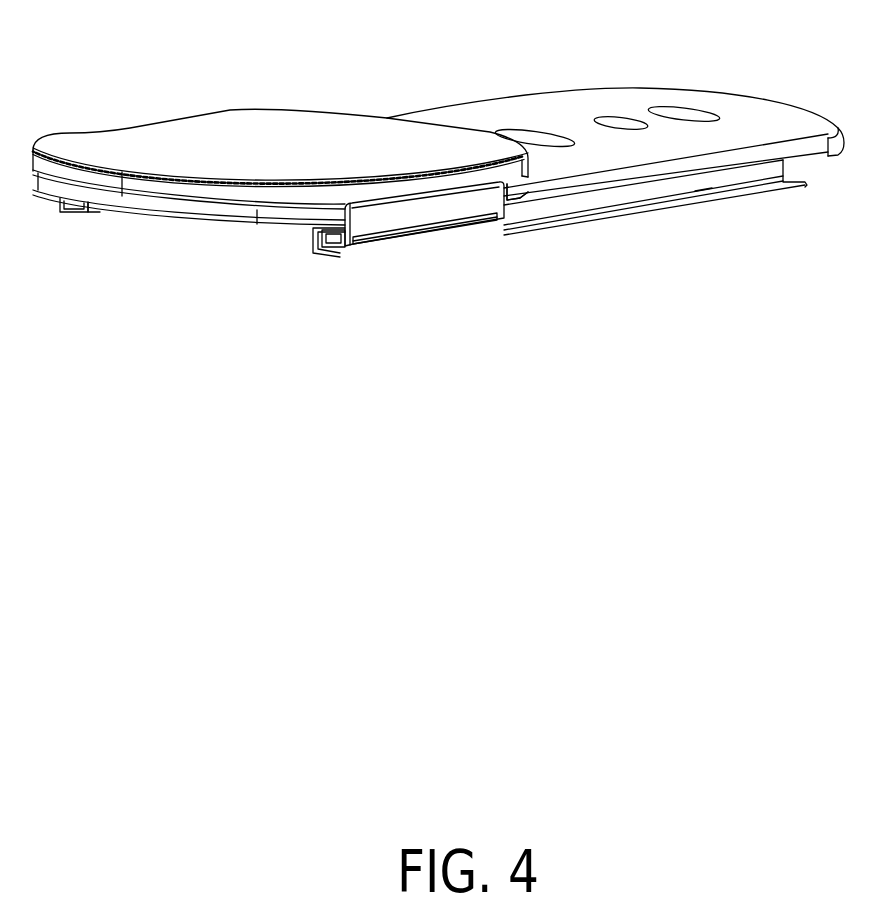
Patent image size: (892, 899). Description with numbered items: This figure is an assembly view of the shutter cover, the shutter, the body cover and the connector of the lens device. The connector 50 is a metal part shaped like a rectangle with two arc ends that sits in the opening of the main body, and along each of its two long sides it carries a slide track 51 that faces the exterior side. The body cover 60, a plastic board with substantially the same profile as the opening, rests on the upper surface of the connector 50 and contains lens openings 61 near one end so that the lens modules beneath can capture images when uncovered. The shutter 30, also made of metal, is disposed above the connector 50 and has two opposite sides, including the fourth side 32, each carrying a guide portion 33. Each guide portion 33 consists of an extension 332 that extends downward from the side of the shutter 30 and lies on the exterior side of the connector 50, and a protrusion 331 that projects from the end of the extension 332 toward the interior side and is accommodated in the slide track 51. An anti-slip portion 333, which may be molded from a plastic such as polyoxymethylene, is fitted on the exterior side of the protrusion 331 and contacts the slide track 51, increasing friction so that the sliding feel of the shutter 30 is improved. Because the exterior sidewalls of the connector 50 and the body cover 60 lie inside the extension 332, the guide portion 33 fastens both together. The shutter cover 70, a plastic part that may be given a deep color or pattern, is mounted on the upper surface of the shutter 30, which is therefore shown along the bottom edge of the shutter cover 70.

The shutter cover 70 is at (181, 124).
The body cover 60 is at (723, 110).
The lens openings 61 is at (622, 125).
The connector 50 is at (800, 158).
The slide track 51 is at (700, 190).
The guide portion 33 is at (433, 222).
The protrusion 331 is at (332, 250).
The extension 332 is at (373, 233).
The anti-slip portion 333 is at (325, 242).
The shutter 30 is at (505, 183).
The fourth side 32 is at (505, 183).